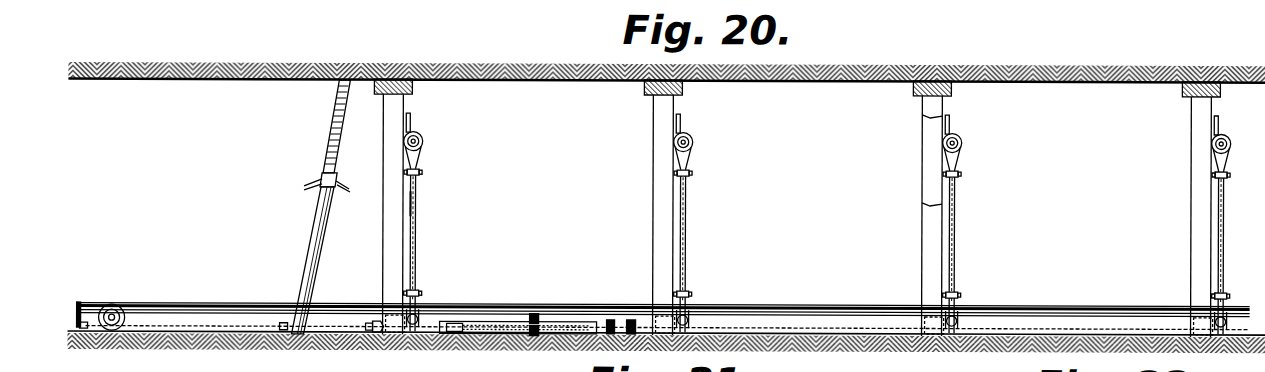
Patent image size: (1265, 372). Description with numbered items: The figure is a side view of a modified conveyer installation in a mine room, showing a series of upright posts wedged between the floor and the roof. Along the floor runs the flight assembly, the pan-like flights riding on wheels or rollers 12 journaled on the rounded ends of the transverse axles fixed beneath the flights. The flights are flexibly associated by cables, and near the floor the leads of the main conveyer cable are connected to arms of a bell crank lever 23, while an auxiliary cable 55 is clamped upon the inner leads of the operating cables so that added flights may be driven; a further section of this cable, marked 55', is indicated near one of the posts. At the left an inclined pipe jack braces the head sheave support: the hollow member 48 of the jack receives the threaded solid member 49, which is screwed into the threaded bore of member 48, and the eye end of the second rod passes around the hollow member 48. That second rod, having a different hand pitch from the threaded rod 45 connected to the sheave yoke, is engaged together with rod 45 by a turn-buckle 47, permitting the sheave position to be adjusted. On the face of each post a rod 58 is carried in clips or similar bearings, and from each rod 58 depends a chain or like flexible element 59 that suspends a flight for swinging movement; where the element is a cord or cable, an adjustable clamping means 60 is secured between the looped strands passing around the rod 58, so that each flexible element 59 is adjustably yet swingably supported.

The wheels or rollers 12 is at (133, 340).
The bell crank lever 23 is at (571, 331).
The threaded rod 45 is at (428, 344).
The turn-buckle 47 is at (370, 343).
The hollow member of pipe jack 48 is at (312, 226).
The solid member of pipe jack 49 is at (332, 132).
The auxiliary cable 55 is at (667, 347).
The chain section 55' is at (429, 203).
The rod 58 is at (423, 140).
The chain or flexible element 59 is at (955, 213).
The adjustable clamping means 60 is at (423, 172).